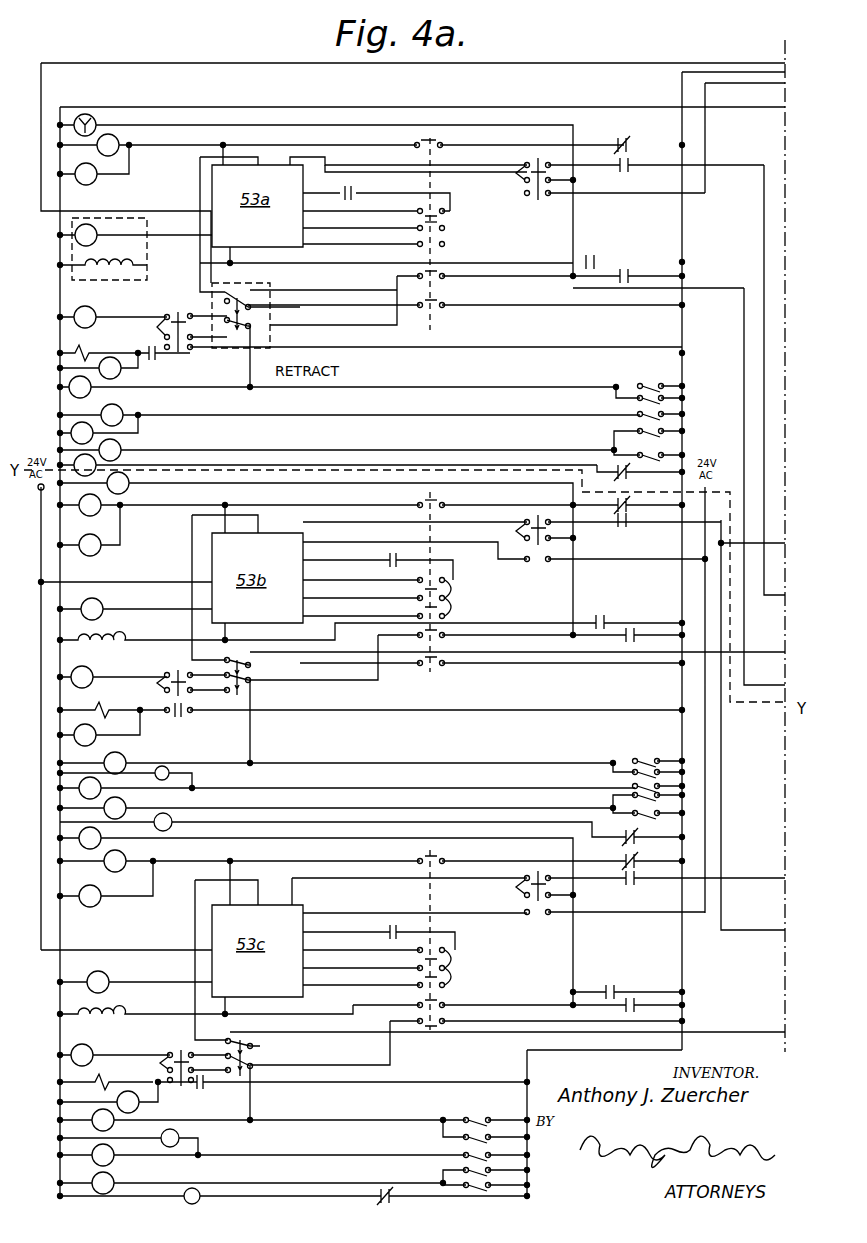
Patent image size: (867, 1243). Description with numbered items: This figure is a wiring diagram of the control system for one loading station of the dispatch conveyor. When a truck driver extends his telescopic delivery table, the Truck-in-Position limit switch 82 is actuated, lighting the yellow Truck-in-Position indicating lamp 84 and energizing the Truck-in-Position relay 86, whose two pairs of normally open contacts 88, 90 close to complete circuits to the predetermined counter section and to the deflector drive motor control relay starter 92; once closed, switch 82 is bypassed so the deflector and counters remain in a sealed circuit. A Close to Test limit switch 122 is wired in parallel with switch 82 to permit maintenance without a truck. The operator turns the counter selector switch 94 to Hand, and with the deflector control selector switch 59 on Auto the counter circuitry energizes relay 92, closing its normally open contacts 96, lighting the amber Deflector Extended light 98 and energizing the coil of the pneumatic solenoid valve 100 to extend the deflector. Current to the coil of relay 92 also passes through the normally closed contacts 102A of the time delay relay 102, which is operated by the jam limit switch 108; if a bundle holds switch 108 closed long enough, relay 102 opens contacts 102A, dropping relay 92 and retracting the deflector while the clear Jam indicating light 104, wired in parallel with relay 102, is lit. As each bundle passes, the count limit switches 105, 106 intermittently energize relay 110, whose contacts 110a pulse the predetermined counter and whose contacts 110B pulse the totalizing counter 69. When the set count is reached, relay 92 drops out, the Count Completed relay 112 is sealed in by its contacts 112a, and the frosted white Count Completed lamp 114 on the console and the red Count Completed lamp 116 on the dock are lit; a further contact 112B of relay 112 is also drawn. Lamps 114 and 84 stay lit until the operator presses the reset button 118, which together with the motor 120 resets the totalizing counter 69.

The yellow Truck-in-Position indicating lamp 84 is at (88, 118).
The Count Completed relay 112 is at (114, 152).
The frosted white Count Completed indicating lamp 114 is at (91, 182).
The motor 120 is at (60, 232).
The totalizing counter 69 is at (150, 228).
The reset button 118 is at (470, 246).
The normally open contacts of relay 110 110a is at (371, 188).
The counter selector switch 94 is at (538, 158).
The normally closed contacts of relay 112 112a is at (626, 142).
The normally open contacts of relay 86 88 is at (630, 163).
The second set of normally open contacts of relay 110 110B is at (631, 250).
The normally open contacts of relay 86 90 is at (629, 274).
The deflector drive motor control relay starter 92 is at (82, 310).
The deflector control selector switch 59 is at (185, 309).
The normally closed contacts of time delay relay 102 102A is at (272, 330).
The pneumatic solenoid valve 100 is at (77, 349).
The normally open contacts of relay 92 96 is at (164, 351).
The amber Deflector Extended light 98 is at (97, 365).
The Truck-in-Position relay 86 is at (73, 385).
The time delay relay 102 is at (120, 410).
The clear Jam indicating light 104 is at (73, 430).
The relay 110 is at (120, 447).
The red Count Completed indicating lamp 116 is at (77, 460).
The Close to Test limit switch 122 is at (634, 393).
The Truck-in-Position limit switch 82 is at (670, 393).
The jam limit switch 108 is at (668, 422).
The count limit switch 105 is at (665, 438).
The count limit switch 106 is at (665, 461).
The relay contact 112B is at (605, 472).